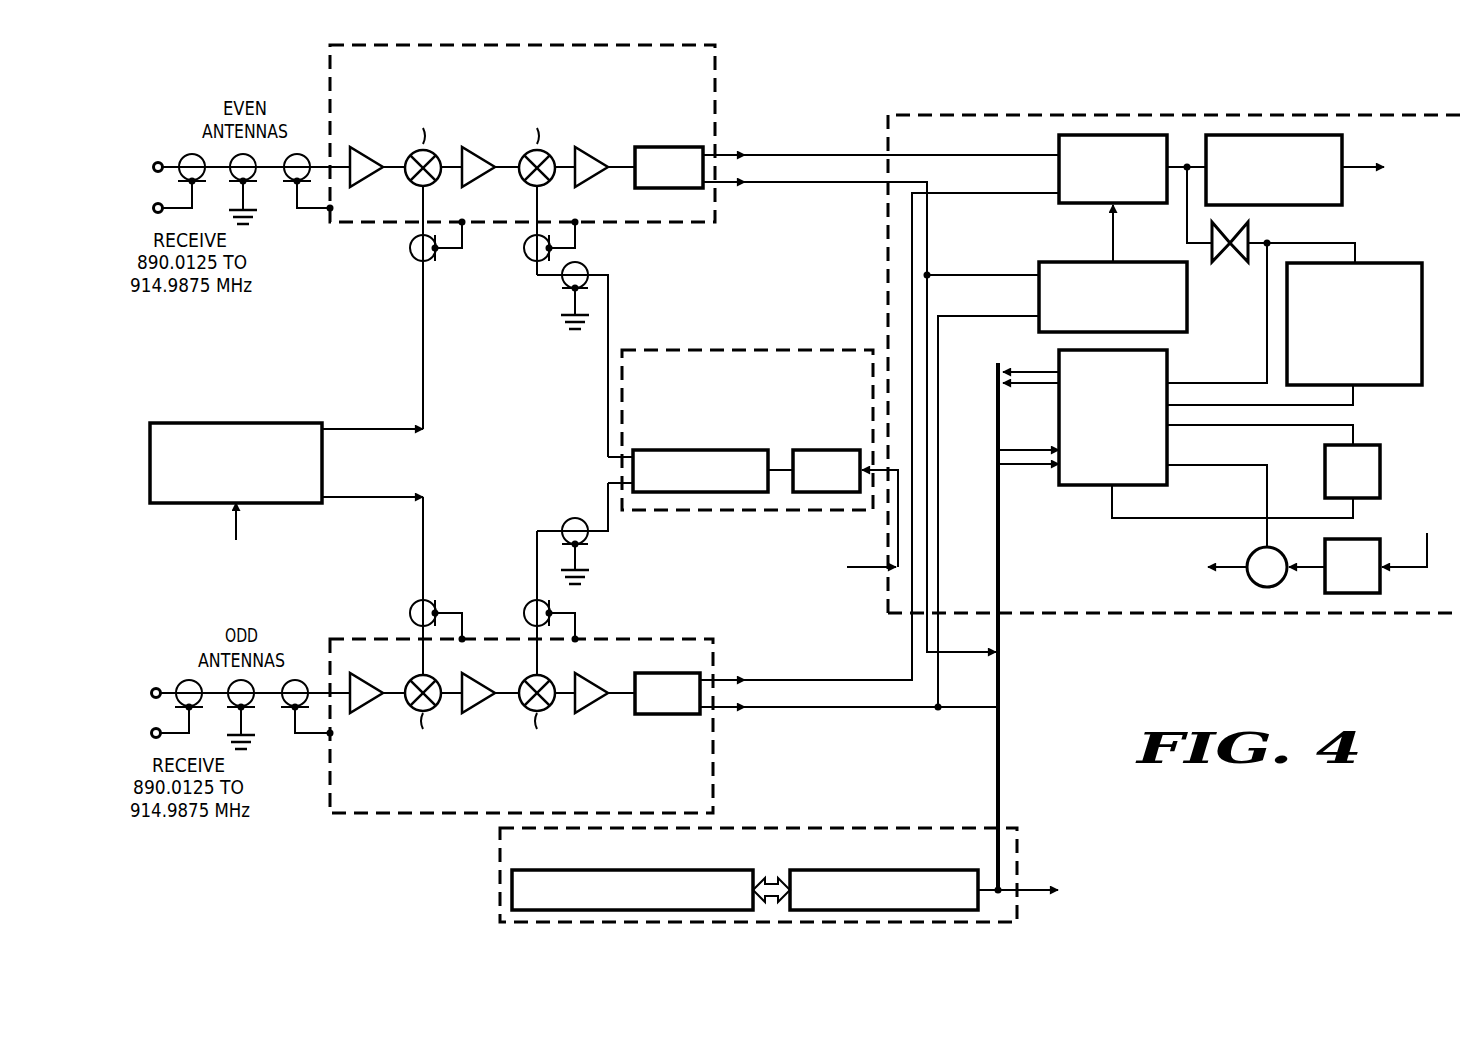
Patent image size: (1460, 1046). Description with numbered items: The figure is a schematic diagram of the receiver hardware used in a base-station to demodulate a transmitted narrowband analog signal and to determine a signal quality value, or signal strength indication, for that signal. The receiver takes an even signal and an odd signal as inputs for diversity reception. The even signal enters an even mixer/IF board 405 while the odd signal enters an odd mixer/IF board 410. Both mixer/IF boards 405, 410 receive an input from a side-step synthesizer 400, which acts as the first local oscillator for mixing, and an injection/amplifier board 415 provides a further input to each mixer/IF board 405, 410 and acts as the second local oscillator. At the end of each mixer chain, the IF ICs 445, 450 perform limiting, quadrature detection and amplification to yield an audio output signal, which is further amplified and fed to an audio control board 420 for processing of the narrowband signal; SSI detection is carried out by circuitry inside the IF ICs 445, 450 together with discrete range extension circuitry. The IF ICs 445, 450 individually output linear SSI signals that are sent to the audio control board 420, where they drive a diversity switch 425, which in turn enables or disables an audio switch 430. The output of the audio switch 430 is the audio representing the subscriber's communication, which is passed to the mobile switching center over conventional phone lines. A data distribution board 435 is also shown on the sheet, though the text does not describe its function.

The side-step synthesizer 400 is at (238, 423).
The even mixer/IF board 405 is at (585, 251).
The odd mixer/IF board 410 is at (578, 648).
The injection/amplifier board 415 is at (758, 349).
The audio control board 420 is at (1080, 479).
The diversity switch 425 is at (1062, 261).
The audio switch 430 is at (1149, 205).
The data distribution board 435 is at (498, 877).
The IF IC 445 is at (670, 147).
The IF IC 450 is at (665, 718).